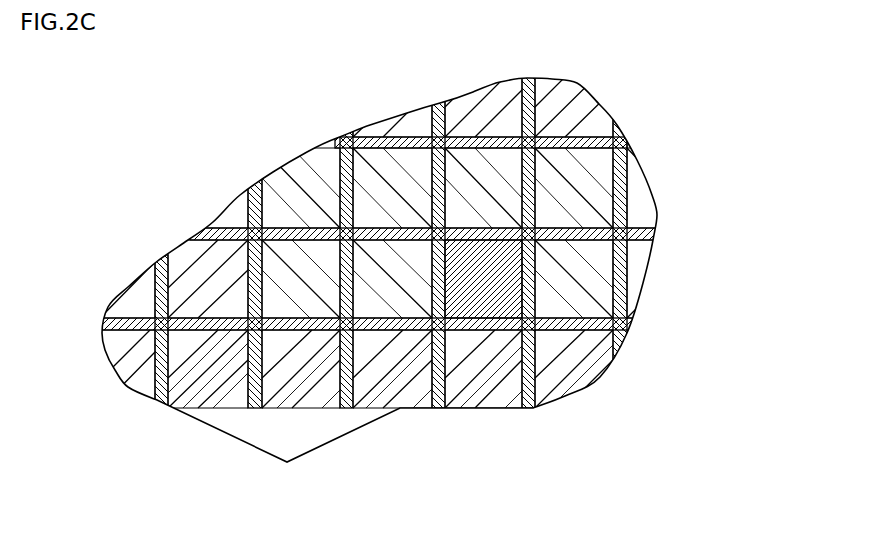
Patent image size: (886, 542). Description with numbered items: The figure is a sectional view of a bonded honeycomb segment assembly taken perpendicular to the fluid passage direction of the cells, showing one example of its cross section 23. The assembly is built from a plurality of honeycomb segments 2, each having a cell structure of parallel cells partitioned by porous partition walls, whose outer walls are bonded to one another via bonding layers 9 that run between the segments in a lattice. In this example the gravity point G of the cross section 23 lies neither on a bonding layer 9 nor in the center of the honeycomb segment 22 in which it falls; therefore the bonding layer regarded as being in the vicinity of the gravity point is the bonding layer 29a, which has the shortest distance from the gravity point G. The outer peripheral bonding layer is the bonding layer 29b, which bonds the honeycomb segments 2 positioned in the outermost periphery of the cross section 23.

The honeycomb segment 2 is at (138, 300).
The bonding layer 9 is at (547, 132).
The gravity point G is at (481, 252).
The honeycomb segment 22 is at (553, 322).
The cross section 23 is at (763, 311).
The bonding layer 29a is at (500, 237).
The bonding layer 29b is at (643, 234).